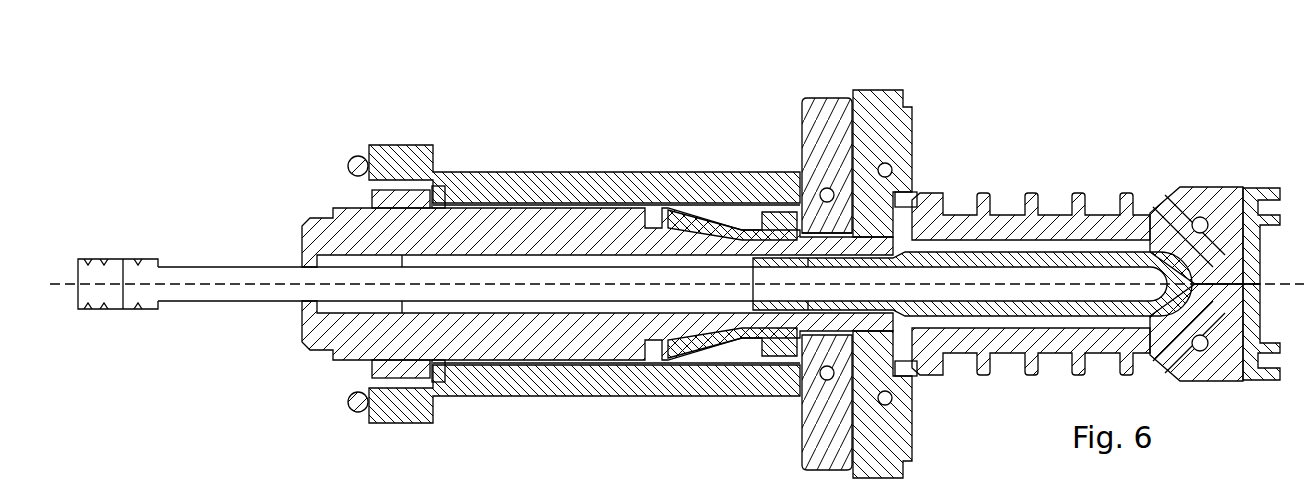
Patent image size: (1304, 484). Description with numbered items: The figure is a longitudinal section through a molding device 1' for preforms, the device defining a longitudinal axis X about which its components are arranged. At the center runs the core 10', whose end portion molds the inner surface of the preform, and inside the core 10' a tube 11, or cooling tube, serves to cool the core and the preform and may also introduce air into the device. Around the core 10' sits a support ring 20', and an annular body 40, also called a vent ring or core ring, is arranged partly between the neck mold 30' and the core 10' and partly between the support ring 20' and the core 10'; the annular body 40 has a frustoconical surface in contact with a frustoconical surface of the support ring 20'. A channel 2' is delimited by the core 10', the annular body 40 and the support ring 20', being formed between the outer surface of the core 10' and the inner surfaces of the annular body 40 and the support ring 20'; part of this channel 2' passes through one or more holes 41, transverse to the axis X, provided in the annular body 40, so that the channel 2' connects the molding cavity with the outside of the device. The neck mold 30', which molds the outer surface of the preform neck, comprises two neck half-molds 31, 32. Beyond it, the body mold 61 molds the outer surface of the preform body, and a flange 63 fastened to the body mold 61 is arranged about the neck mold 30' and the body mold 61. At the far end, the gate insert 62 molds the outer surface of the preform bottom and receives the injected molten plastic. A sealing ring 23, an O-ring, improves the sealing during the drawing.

The axis X is at (112, 284).
The tube 11 is at (203, 267).
The channel 2' is at (597, 279).
The support ring 20' is at (584, 242).
The core 10' is at (616, 204).
The sealing ring 23 is at (350, 160).
The annular body 40 is at (677, 205).
The holes 41 is at (680, 345).
The neck mold 30' is at (814, 123).
The neck half-mold 32 is at (810, 405).
The neck half-mold 31 is at (828, 115).
The flange 63 is at (908, 102).
The molding device 1' is at (1006, 83).
The body mold 61 is at (1055, 213).
The gate insert 62 is at (1185, 187).